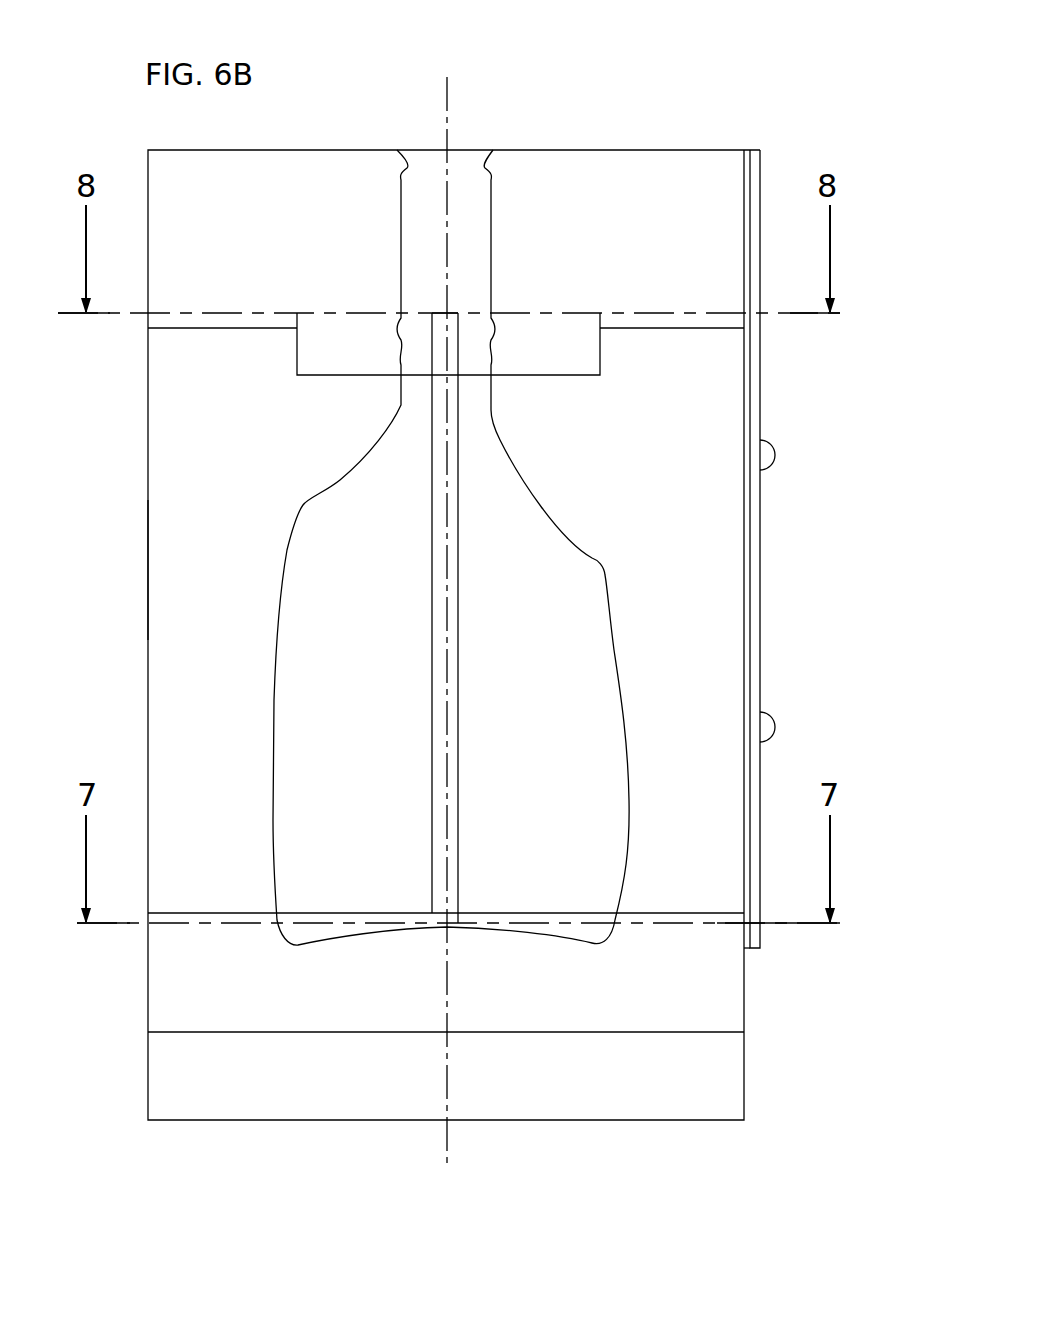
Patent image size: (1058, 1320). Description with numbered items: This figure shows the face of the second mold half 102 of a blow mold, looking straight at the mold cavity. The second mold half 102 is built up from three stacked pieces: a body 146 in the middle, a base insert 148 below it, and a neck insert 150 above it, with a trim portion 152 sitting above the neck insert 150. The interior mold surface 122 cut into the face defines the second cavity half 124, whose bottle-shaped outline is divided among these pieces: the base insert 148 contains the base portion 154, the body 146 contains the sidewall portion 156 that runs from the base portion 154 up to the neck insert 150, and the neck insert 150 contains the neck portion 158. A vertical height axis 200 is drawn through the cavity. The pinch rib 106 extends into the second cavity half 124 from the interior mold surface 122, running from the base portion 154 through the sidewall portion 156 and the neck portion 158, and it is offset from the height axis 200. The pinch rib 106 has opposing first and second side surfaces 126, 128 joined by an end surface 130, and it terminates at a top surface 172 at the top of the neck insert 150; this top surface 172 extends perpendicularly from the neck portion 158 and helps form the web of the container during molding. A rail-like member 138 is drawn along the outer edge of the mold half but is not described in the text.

The second mold half 102 is at (607, 110).
The height axis 200 is at (448, 130).
The trim portion 152 is at (148, 200).
The side rail 138 is at (762, 212).
The neck insert 150 is at (297, 355).
The neck portion 158 is at (398, 342).
The top surface 172 is at (448, 313).
The body 146 is at (148, 570).
The base insert 148 is at (148, 978).
The sidewall portion 156 is at (272, 745).
The pinch rib 106 is at (430, 603).
The end surface 130 is at (440, 678).
The second side surface 128 is at (432, 893).
The first side surface 126 is at (460, 882).
The interior mold surface 122 is at (590, 567).
The second cavity half 124 is at (548, 697).
The base portion 154 is at (285, 946).